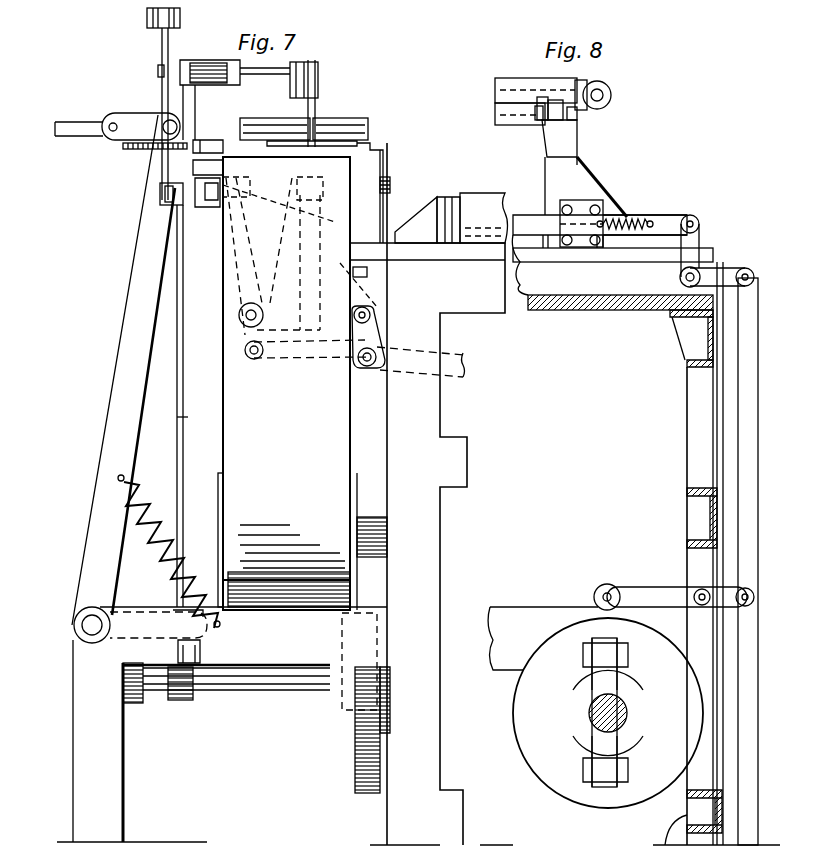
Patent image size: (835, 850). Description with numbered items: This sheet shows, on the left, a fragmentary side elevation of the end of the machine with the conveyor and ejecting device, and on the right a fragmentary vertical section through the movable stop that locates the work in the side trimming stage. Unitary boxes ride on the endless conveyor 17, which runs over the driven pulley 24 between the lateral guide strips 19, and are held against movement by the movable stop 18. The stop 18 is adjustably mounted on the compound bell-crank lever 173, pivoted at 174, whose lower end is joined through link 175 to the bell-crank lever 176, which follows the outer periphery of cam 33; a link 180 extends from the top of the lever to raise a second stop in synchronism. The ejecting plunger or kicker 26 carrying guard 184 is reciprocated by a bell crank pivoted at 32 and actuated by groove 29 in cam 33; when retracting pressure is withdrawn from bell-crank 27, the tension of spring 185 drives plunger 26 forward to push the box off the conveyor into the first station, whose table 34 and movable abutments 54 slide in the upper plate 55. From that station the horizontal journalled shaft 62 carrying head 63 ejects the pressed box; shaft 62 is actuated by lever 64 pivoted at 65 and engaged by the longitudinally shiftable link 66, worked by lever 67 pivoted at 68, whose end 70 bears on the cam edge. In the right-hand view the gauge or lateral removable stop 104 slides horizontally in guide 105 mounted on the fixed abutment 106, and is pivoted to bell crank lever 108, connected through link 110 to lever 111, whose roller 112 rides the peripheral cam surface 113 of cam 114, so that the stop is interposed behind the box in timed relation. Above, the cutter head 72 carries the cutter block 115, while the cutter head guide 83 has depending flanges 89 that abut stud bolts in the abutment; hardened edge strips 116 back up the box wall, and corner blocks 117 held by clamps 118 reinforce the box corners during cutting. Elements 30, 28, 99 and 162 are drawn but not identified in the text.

In FIG. 7, the link 180 is at (181, 18).
In FIG. 7, the pivot 174 is at (158, 69).
In FIG. 7, the compound bell-crank lever 173 is at (163, 89).
In FIG. 7, the link 175 is at (160, 195).
In FIG. 7, the bell-crank 27 is at (130, 349).
In FIG. 7, the bell-crank lever 176 is at (175, 392).
In FIG. 7, the ejecting plunger or kicker 26 is at (208, 140).
In FIG. 7, the lateral guide strips 19 is at (252, 118).
In FIG. 7, the movable stop 18 is at (315, 97).
In FIG. 7, the guard 184 is at (336, 119).
In FIG. 7, the head 63 is at (382, 188).
In FIG. 7, the pressing walls, followers or movable abutments 54 is at (477, 200).
In FIG. 7, the table or floor 34 is at (497, 243).
In FIG. 7, the horizontal journalled shaft 62 is at (286, 196).
In FIG. 7, the lever 64 is at (232, 268).
In FIG. 7, the pivot 65 is at (238, 313).
In FIG. 7, the longitudinally shiftable link 66 is at (302, 365).
In FIG. 7, the lever 67 is at (350, 370).
In FIG. 7, the pivot 68 is at (377, 320).
In FIG. 7, the lever end or roller 70 is at (367, 275).
In FIG. 7, the endless conveyor 17 is at (286, 383).
In FIG. 7, the driven pulley 24 is at (218, 490).
In FIG. 7, the spring 185 is at (160, 543).
In FIG. 7, the yoke 30 is at (203, 630).
In FIG. 7, the pivot 28 is at (92, 642).
In FIG. 7, the pivot 32 is at (257, 683).
In FIG. 7, the cam 33 is at (352, 713).
In FIG. 7, the groove 29 is at (367, 725).
In FIG. 8, the cutter head 72 is at (523, 68).
In FIG. 8, the cutter head guide 83 is at (550, 72).
In FIG. 8, the depending flanges 89 is at (580, 112).
In FIG. 8, the cutter block 115 is at (508, 125).
In FIG. 8, the adjustable guide or gauge corner blocks 117 is at (542, 123).
In FIG. 8, the clamps 118 is at (557, 121).
In FIG. 8, the pin 99 is at (577, 127).
In FIG. 8, the hardened edge strips 116 is at (540, 133).
In FIG. 8, the fixed abutment 106 is at (570, 183).
In FIG. 8, the guide 105 is at (590, 208).
In FIG. 8, the bell crank lever 108 is at (717, 275).
In FIG. 8, the gauge or lateral removable stop 104 is at (530, 230).
In FIG. 8, the upper plate or table 55 is at (603, 300).
In FIG. 8, the link 110 is at (750, 468).
In FIG. 8, the roller 112 is at (605, 585).
In FIG. 8, the lever 111 is at (660, 582).
In FIG. 8, the peripheral cam surface 113 is at (613, 622).
In FIG. 8, the cam 114 is at (537, 697).
In FIG. 8, the hub 162 is at (625, 714).